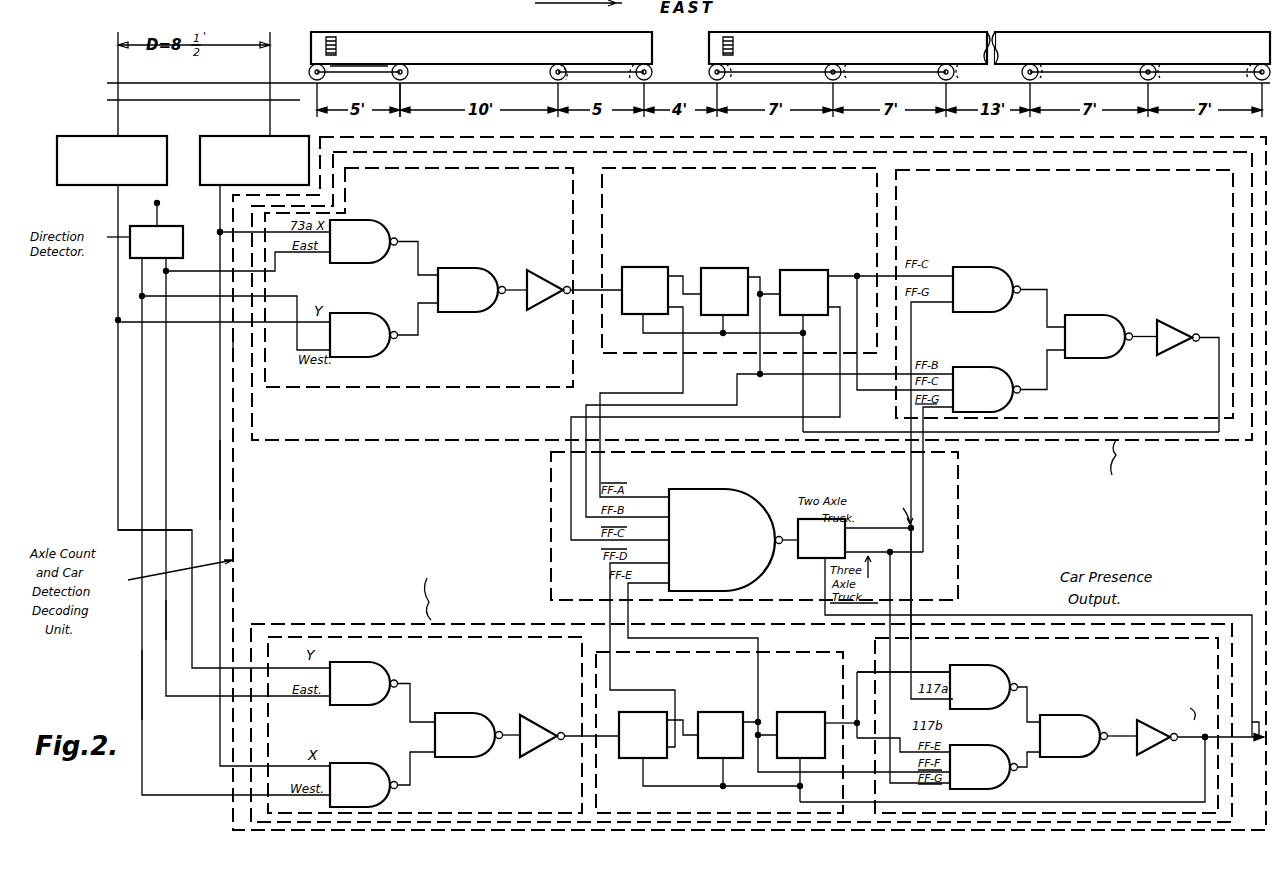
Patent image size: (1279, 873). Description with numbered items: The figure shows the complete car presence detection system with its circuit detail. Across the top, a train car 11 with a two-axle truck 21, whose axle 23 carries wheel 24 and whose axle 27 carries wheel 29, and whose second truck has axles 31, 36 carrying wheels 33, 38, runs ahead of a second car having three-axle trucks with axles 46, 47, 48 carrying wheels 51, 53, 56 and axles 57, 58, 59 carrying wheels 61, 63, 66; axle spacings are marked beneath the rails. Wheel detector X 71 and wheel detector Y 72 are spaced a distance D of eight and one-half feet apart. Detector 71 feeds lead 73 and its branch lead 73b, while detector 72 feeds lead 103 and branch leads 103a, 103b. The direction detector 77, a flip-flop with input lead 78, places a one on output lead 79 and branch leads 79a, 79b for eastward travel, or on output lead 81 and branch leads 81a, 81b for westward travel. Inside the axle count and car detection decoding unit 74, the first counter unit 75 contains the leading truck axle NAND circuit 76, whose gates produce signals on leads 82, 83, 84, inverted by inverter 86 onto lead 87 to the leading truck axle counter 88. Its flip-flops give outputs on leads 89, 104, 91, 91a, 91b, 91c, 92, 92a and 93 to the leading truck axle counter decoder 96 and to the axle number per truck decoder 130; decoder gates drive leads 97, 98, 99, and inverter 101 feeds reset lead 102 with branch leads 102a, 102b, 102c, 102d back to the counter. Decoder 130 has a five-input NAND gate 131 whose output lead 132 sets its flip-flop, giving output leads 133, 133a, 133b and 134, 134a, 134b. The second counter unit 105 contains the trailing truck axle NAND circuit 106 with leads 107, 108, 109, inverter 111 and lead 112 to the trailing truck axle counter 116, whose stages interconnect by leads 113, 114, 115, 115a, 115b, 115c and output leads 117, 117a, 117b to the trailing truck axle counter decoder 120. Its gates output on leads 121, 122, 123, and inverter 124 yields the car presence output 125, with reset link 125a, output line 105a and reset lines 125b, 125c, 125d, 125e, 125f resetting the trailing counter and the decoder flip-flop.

The train car 11 is at (392, 30).
The two-axle truck 21 is at (357, 66).
The axle 23 is at (309, 70).
The wheel 24 is at (312, 76).
The axle 27 is at (402, 64).
The wheel 29 is at (409, 72).
The axle 31 is at (549, 72).
The wheel 33 is at (562, 64).
The axle 36 is at (652, 68).
The wheel 38 is at (640, 64).
The axle 46 is at (708, 77).
The axle 47 is at (830, 64).
The axle 48 is at (943, 64).
The wheel 51 is at (732, 66).
The wheel 53 is at (848, 64).
The wheel 56 is at (962, 64).
The axle 57 is at (1022, 78).
The axle 58 is at (1142, 64).
The axle 59 is at (1258, 62).
The wheel 61 is at (1038, 64).
The wheel 63 is at (1162, 64).
The wheel 66 is at (1234, 64).
The wheel detector X 71 is at (194, 140).
The wheel detector Y 72 is at (74, 136).
The lead 73 is at (217, 239).
The lead 73b is at (220, 480).
The axle count and car detection decoding unit 74 is at (230, 353).
The first counter unit 75 is at (1010, 442).
The leading truck axle NAND circuit 76 is at (368, 388).
The direction detector 77 is at (216, 220).
The input lead 78 is at (160, 205).
The output lead 79 is at (166, 276).
The lead 79a is at (248, 261).
The lead 79b is at (166, 616).
The output lead 81 is at (142, 276).
The lead 81a is at (276, 298).
The lead 81b is at (138, 686).
The output lead 82 is at (418, 242).
The output lead 83 is at (416, 306).
The output lead 84 is at (517, 274).
The inverter 86 is at (544, 270).
The lead 87 is at (587, 285).
The leading truck axle counter 88 is at (604, 168).
The lead 89 is at (679, 272).
The lead 91 is at (753, 272).
The FF-B output junction 91a is at (772, 274).
The lead 91b is at (782, 374).
The lead 91c is at (754, 398).
The lead 92 is at (843, 272).
The lead 92a is at (715, 413).
The lead 93 is at (846, 336).
The leading truck axle counter decoder 96 is at (1158, 420).
The lead 97 is at (1042, 288).
The lead 98 is at (1036, 362).
The lead 99 is at (1142, 320).
The inverter 101 is at (1164, 318).
The lead 102 is at (1214, 340).
The lead 102a is at (804, 327).
The lead 102b is at (748, 350).
The lead 102c is at (716, 332).
The lead 102d is at (652, 336).
The lead 103 is at (112, 197).
The lead 103a is at (118, 320).
The lead 103b is at (180, 530).
The lead 104 is at (666, 380).
The second counter unit 105 is at (276, 624).
The car presence output line 105a is at (1210, 606).
The trailing truck axle NAND circuit 106 is at (324, 636).
The lead 107 is at (409, 704).
The lead 108 is at (406, 764).
The lead 109 is at (507, 740).
The inverter 111 is at (534, 744).
The lead 112 is at (572, 732).
The lead 113 is at (686, 718).
The lead 114 is at (628, 706).
The lead 115 is at (752, 718).
The lead 115a is at (758, 666).
The lead 115b is at (774, 710).
The lead 115c is at (824, 774).
The trailing truck axle counter 116 is at (820, 650).
The lead 117 is at (834, 716).
The lead 117a is at (954, 676).
The lead 117b is at (906, 746).
The trailing truck axle counter decoder 120 is at (990, 638).
The lead 121 is at (1028, 690).
The lead 122 is at (1024, 746).
The lead 123 is at (1106, 740).
The inverter 124 is at (1148, 748).
The output lead 125 is at (1198, 730).
The lead 125a is at (1246, 740).
The reset line to trailing counter 125b is at (1152, 798).
The reset line to FF-F 125c is at (986, 773).
The reset line junction 125d is at (755, 784).
The reset line to FF-E 125e is at (722, 776).
The reset line to FF-D 125f is at (642, 776).
The axle number per truck decoder 130 is at (530, 466).
The NAND gate 131 is at (765, 577).
The lead 132 is at (772, 539).
The lead 133 is at (856, 538).
The lead 133a is at (896, 472).
The lead 133b is at (910, 570).
The lead 134 is at (872, 560).
The lead 134a is at (890, 585).
The lead 134b is at (922, 518).